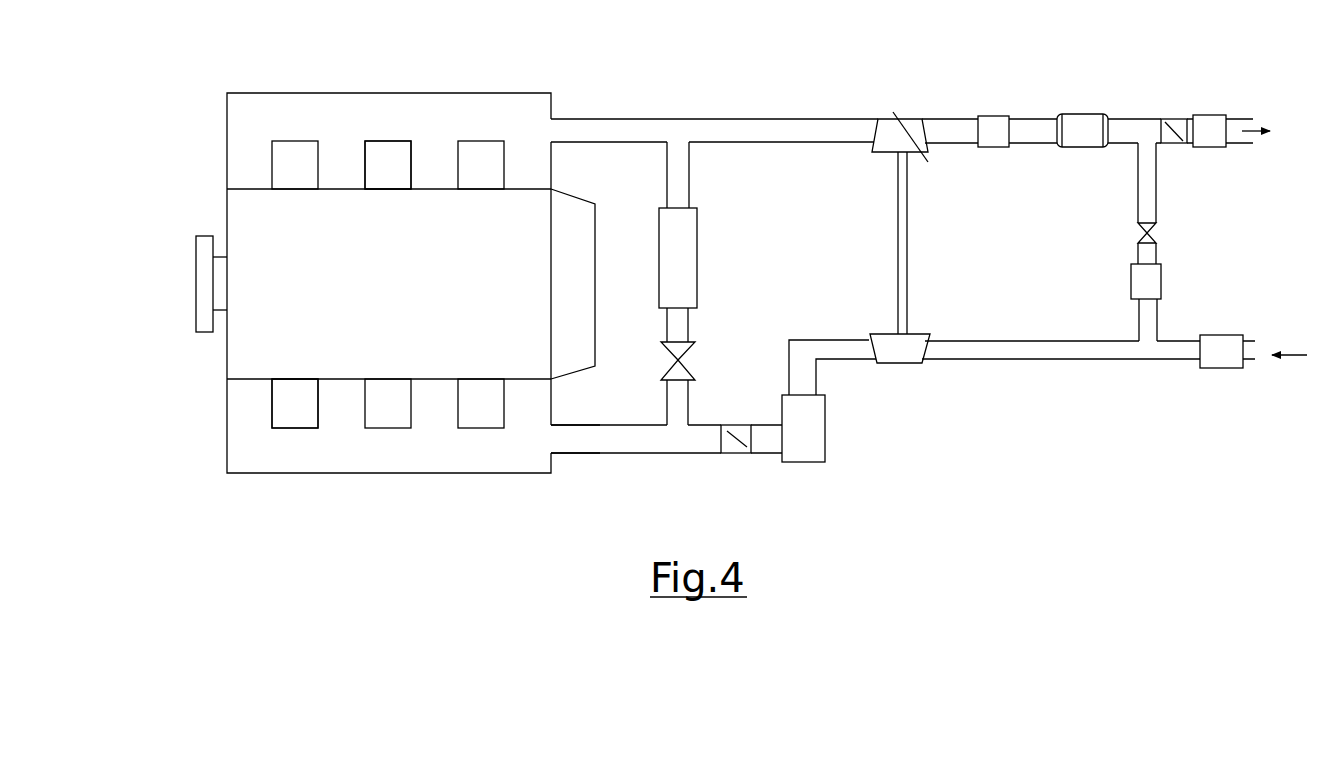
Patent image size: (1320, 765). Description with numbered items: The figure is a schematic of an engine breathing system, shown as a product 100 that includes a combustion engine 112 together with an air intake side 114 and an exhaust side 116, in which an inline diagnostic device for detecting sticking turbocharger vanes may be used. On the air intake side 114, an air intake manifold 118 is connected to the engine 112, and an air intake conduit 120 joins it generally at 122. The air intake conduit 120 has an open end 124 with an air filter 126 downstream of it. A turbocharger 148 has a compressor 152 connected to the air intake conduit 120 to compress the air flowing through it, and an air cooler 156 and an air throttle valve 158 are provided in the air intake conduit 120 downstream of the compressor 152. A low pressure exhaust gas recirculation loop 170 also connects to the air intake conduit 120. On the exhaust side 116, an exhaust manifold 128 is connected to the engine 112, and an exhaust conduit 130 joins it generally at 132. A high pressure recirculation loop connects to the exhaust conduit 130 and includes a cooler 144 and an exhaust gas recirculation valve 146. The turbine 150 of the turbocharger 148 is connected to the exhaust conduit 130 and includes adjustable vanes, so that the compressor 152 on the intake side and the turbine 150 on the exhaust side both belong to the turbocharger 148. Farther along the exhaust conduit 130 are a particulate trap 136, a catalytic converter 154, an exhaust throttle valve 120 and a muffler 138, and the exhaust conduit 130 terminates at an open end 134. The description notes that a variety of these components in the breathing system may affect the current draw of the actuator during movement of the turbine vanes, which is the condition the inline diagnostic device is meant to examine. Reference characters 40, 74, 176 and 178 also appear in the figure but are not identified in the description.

The EGR passage 40 is at (697, 190).
The compressor inlet passage 74 is at (1158, 342).
The product 100 is at (190, 309).
The combustion engine 112 is at (265, 335).
The air intake side 114 is at (185, 426).
The exhaust side 116 is at (200, 109).
The air intake manifold 118 is at (333, 443).
The air intake conduit 120 is at (1173, 118).
The intake conduit connection 122 is at (555, 421).
The open end 124 is at (1252, 347).
The air filter 126 is at (1210, 370).
The exhaust manifold 128 is at (357, 112).
The exhaust conduit 130 is at (705, 117).
The exhaust conduit connection 132 is at (552, 113).
The open end 134 is at (1258, 121).
The particulate trap 136 is at (985, 115).
The muffler 138 is at (1200, 115).
The cooler 144 is at (697, 275).
The exhaust gas recirculation valve 146 is at (668, 358).
The turbocharger 148 is at (893, 222).
The turbine 150 is at (890, 112).
The compressor 152 is at (883, 337).
The catalytic converter 154 is at (1073, 122).
The air cooler 156 is at (828, 432).
The air throttle valve 158 is at (745, 455).
The low pressure exhaust gas recirculation loop 170 is at (1135, 204).
The bypass valve 176 is at (1158, 230).
The bypass device 178 is at (1162, 282).